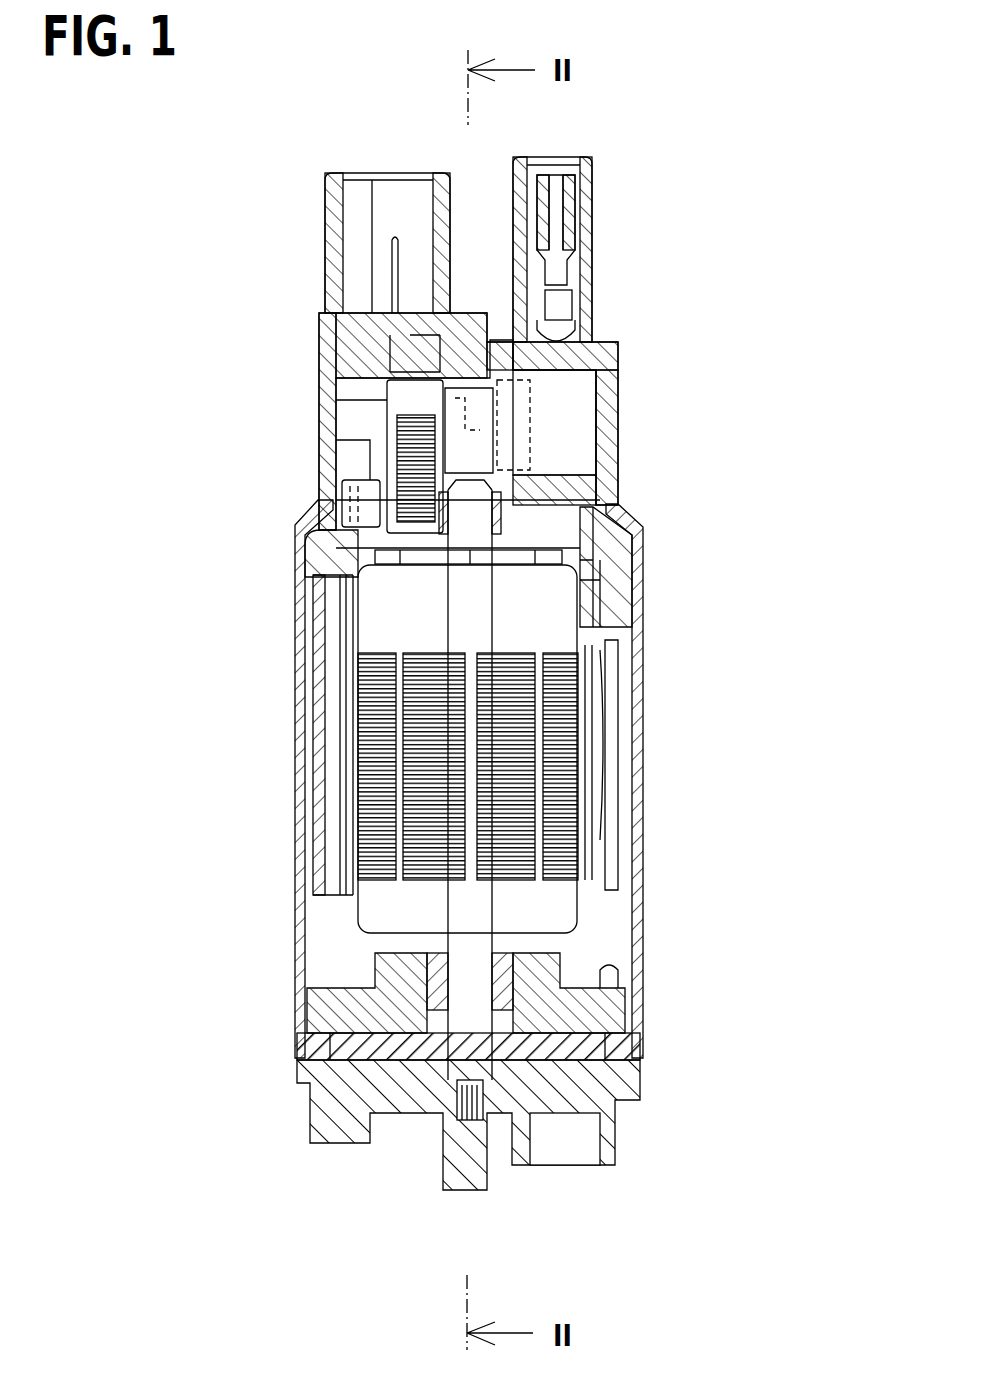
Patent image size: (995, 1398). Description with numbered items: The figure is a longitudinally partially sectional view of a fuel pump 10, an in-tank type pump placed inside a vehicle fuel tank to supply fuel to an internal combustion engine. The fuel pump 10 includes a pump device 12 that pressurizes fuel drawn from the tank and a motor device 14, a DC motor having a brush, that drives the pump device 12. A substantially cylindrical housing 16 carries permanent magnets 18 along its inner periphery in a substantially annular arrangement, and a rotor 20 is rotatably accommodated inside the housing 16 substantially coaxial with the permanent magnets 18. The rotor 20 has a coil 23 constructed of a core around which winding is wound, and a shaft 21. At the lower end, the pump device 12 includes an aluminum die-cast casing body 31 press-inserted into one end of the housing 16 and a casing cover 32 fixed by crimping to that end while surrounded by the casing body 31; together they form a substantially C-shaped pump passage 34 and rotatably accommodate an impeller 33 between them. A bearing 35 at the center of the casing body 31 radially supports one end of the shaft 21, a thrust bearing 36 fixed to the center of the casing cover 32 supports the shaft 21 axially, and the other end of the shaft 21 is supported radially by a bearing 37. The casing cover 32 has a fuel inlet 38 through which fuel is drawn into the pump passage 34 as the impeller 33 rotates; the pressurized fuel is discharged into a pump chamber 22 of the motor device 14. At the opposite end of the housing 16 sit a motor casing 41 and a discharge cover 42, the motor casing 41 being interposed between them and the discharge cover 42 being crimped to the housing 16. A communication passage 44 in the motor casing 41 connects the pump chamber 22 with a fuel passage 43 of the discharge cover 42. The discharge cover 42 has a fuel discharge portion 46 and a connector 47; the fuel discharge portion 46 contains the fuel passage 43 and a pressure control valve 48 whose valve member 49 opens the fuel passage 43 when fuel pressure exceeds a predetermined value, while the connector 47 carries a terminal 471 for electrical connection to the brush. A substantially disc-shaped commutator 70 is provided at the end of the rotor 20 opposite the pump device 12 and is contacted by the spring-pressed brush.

The fuel pump 10 is at (657, 382).
The pump device 12 is at (657, 1010).
The motor device 14 is at (293, 738).
The housing 16 is at (644, 732).
The permanent magnets 18 is at (333, 800).
The rotor 20 is at (598, 800).
The shaft 21 is at (430, 1065).
The pump chamber 22 is at (325, 930).
The coil 23 is at (601, 665).
The casing body 31 is at (612, 1000).
The casing cover 32 is at (626, 1080).
The impeller 33 is at (597, 1043).
The pump passage 34 is at (470, 1048).
The bearing 35 is at (512, 960).
The thrust bearing 36 is at (497, 1090).
The bearing 37 is at (644, 530).
The fuel inlet 38 is at (573, 1150).
The motor casing 41 is at (646, 548).
The discharge cover 42 is at (400, 405).
The fuel passage 43 is at (576, 240).
The communication passage 44 is at (558, 510).
The fuel discharge portion 46 is at (593, 213).
The connector 47 is at (335, 173).
The terminal 471 is at (392, 258).
The pressure control valve 48 is at (580, 300).
The valve member 49 is at (566, 342).
The commutator 70 is at (646, 585).